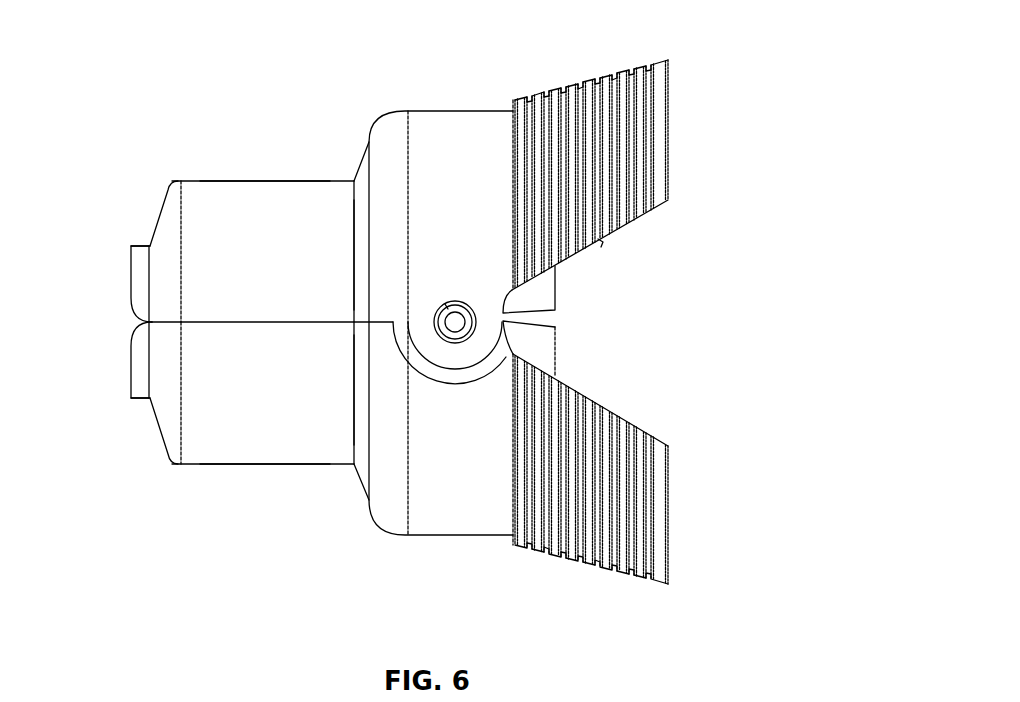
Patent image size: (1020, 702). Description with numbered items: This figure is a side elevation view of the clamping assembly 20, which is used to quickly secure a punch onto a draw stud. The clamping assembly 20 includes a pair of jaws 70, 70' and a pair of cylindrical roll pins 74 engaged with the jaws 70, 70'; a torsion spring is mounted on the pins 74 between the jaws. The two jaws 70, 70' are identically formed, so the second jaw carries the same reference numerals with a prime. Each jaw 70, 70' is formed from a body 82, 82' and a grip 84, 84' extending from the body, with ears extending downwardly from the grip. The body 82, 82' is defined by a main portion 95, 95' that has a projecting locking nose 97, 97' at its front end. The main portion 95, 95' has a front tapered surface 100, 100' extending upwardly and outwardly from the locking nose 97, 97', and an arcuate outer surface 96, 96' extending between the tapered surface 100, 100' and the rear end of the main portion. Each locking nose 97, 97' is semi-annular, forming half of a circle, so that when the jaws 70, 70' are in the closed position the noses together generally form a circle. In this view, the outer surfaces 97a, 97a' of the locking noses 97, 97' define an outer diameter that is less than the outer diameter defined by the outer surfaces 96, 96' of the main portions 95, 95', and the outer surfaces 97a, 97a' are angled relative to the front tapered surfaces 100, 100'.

The clamping assembly 20 is at (706, 86).
The jaw 70 is at (297, 175).
The jaw 70' is at (314, 484).
The cylindrical roll pins 74 is at (455, 318).
The body 82 is at (265, 165).
The body 82' is at (265, 484).
The grip 84 is at (590, 148).
The grip 84' is at (590, 494).
The main portion 95 is at (205, 202).
The main portion 95' is at (204, 446).
The outer surface 96 is at (318, 201).
The outer surface 96' is at (322, 426).
The locking nose 97 is at (106, 320).
The locking nose 97' is at (106, 360).
The outer surface of locking nose 97a is at (121, 209).
The outer surface of locking nose 97a' is at (120, 435).
The front tapered surface 100 is at (148, 175).
The front tapered surface 100' is at (149, 461).